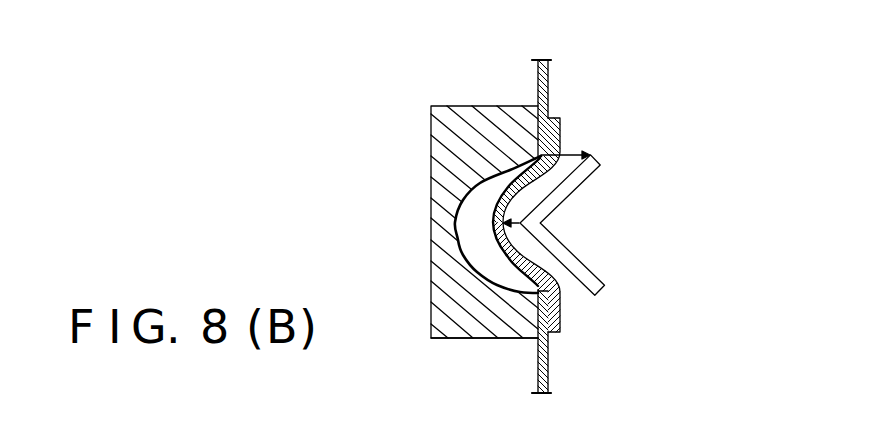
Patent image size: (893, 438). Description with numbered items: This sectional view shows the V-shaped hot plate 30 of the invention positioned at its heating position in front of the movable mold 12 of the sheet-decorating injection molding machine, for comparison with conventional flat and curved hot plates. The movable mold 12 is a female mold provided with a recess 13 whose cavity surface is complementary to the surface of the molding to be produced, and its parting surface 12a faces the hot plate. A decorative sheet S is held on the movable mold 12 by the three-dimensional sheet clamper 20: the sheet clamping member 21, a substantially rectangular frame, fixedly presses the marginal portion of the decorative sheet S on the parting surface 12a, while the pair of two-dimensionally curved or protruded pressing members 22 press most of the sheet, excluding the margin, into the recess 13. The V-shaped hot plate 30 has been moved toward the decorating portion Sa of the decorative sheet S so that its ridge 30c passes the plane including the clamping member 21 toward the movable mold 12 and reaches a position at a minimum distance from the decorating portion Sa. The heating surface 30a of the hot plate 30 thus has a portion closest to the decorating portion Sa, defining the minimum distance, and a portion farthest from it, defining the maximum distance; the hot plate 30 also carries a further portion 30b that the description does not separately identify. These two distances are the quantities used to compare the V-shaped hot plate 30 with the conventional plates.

The movable mold 12 is at (447, 105).
The parting surface 12a is at (537, 358).
The recess 13 is at (458, 241).
The three-dimensional sheet clamper 20 is at (567, 310).
The sheet clamping member 21 is at (562, 331).
The pressing members 22 is at (478, 182).
The V-shaped hot plate 30 is at (590, 261).
The heating surface 30a is at (600, 170).
The lower arm 30b is at (575, 287).
The ridge 30c is at (545, 237).
The decorative sheet S is at (538, 78).
The decorating portion Sa is at (536, 293).